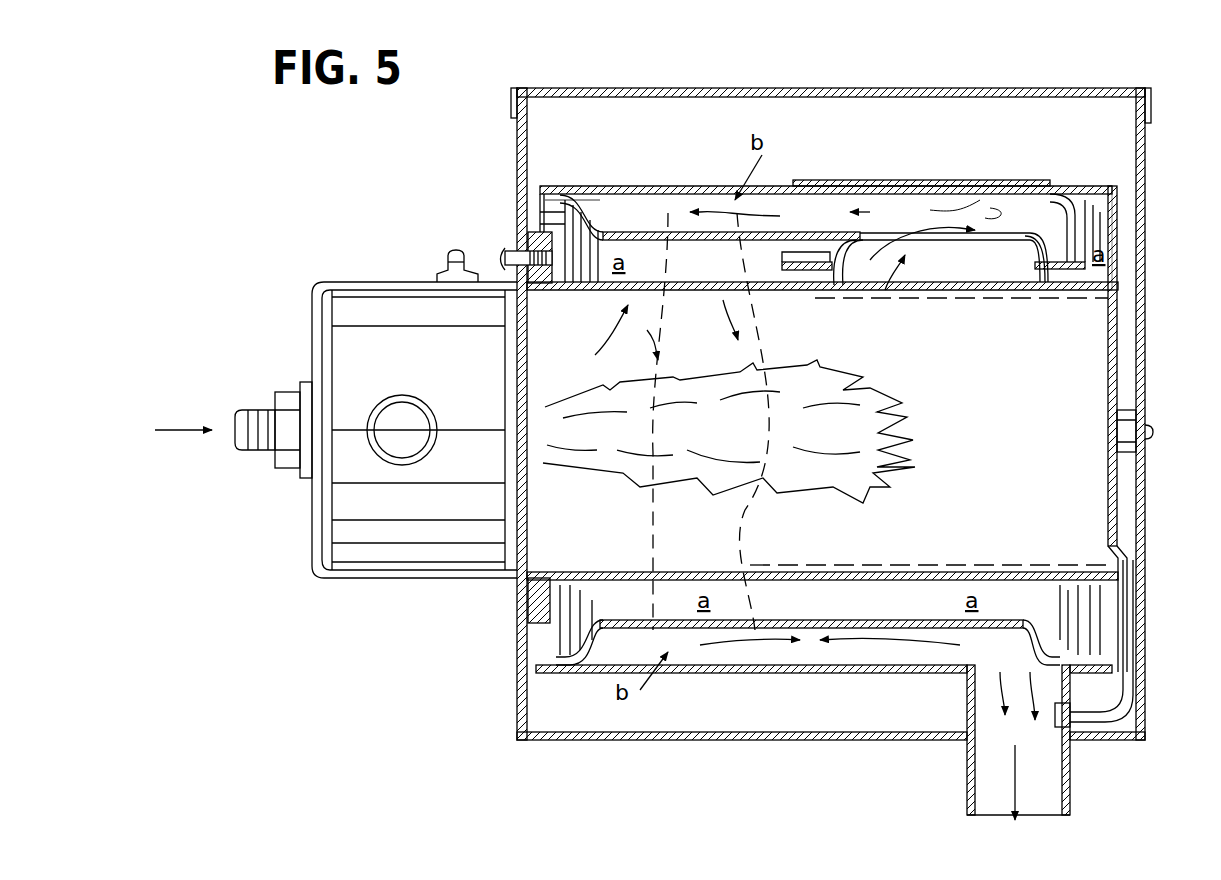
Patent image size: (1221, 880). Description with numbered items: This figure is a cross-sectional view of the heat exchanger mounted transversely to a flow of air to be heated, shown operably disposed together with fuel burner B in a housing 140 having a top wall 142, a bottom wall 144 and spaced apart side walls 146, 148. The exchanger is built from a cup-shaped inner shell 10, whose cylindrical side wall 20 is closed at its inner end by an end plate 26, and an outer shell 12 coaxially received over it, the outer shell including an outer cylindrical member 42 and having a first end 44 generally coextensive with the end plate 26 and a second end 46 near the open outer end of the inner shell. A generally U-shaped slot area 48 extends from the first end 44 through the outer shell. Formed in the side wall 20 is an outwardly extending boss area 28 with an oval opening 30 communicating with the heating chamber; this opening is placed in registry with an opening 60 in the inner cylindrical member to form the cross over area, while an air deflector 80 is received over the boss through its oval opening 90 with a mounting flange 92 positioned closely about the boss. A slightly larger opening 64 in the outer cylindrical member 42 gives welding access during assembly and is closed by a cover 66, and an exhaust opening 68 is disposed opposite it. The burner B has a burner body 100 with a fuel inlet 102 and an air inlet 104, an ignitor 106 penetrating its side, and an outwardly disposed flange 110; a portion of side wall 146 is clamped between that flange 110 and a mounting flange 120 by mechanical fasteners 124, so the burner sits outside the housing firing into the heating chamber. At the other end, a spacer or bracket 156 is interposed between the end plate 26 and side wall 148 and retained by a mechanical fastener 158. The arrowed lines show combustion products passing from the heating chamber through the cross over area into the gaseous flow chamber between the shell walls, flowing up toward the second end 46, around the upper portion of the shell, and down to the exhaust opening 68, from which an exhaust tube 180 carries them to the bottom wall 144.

The inner shell 10 is at (594, 341).
The outer shell 12 is at (615, 184).
The side wall 20 is at (607, 570).
The end plate 26 is at (1105, 300).
The boss area 28 is at (848, 270).
The oval opening 30 is at (1005, 245).
The outer cylindrical member 42 is at (672, 185).
The first end 44 is at (740, 232).
The second end 46 is at (555, 194).
The U-shaped slot area 48 is at (935, 562).
The opening 60 is at (1005, 265).
The opening 64 is at (1040, 188).
The cover 66 is at (890, 185).
The exhaust opening 68 is at (990, 675).
The air deflector 80 is at (812, 272).
The oval opening 90 is at (1055, 192).
The mounting flange 92 is at (815, 255).
The burner body 100 is at (385, 572).
The fuel inlet 102 is at (257, 450).
The air inlet 104 is at (437, 408).
The ignitor 106 is at (455, 256).
The flange 110 is at (510, 480).
The mounting flange 120 is at (526, 240).
The mechanical fasteners 124 is at (540, 265).
The housing 140 is at (517, 735).
The top wall 142 is at (868, 90).
The bottom wall 144 is at (810, 742).
The side wall 146 is at (519, 653).
The side wall 148 is at (1146, 358).
The spacer or bracket 156 is at (1125, 440).
The mechanical fastener 158 is at (1152, 428).
The exhaust tube 180 is at (967, 712).
The fuel burner B is at (410, 270).